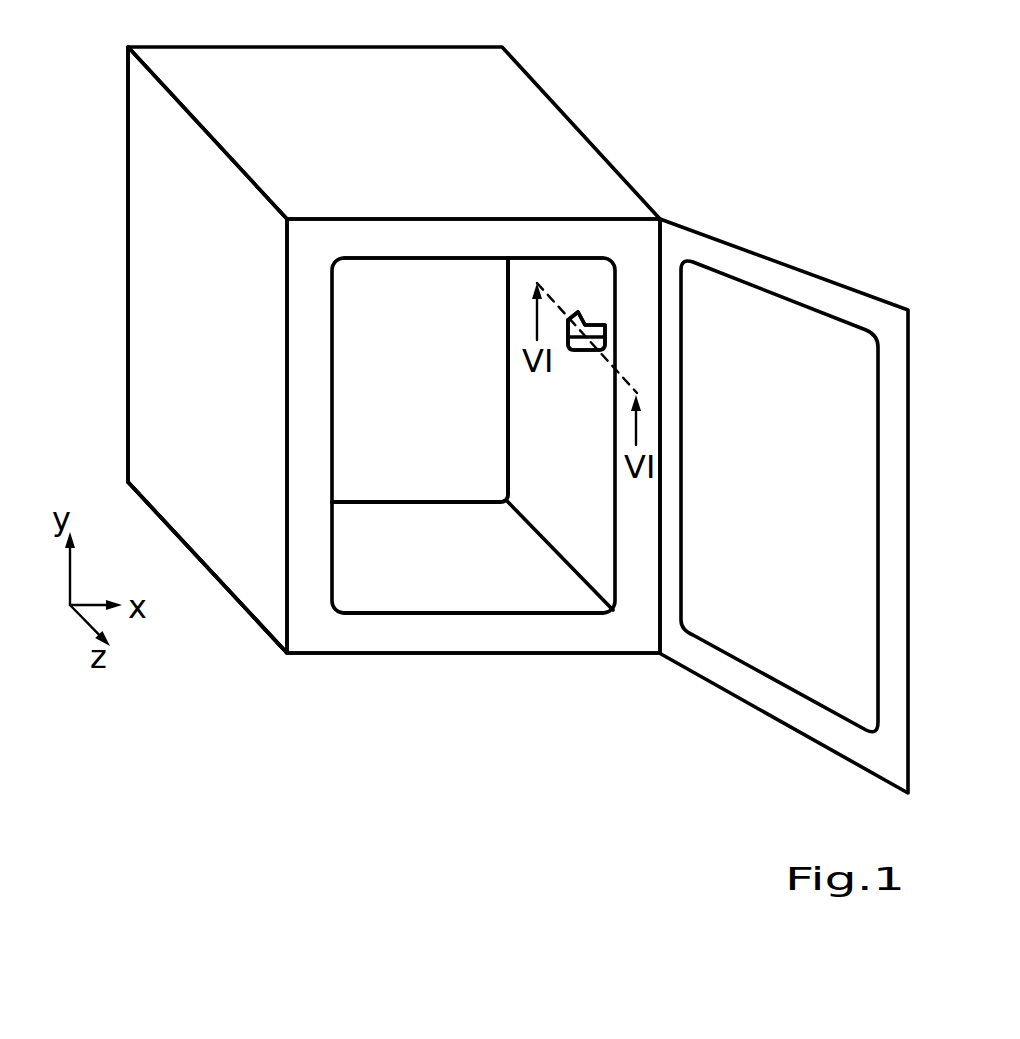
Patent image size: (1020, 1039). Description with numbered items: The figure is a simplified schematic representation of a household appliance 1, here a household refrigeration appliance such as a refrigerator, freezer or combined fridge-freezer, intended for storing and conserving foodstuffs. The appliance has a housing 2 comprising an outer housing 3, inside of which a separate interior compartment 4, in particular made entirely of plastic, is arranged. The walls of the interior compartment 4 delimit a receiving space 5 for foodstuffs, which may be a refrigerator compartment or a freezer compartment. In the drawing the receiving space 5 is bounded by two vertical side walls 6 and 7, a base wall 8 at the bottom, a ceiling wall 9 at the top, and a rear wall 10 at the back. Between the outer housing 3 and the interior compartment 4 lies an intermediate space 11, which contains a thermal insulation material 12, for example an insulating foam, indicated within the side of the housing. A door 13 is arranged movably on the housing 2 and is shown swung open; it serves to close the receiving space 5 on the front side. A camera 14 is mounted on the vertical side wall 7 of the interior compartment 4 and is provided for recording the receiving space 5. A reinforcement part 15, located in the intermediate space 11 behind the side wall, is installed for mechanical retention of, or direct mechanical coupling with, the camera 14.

The household appliance 1 is at (614, 138).
The housing 2 is at (111, 294).
The outer housing 3 is at (162, 370).
The interior compartment 4 is at (317, 414).
The receiving space 5 is at (410, 600).
The vertical side wall 6 is at (331, 337).
The vertical side wall 7 is at (620, 512).
The base wall 8 is at (525, 595).
The ceiling wall 9 is at (445, 258).
The rear wall 10 is at (413, 290).
The intermediate space 11 is at (311, 611).
The thermal insulation material 12 is at (255, 537).
The door 13 is at (768, 241).
The camera 14 is at (588, 365).
The reinforcement part 15 is at (607, 306).